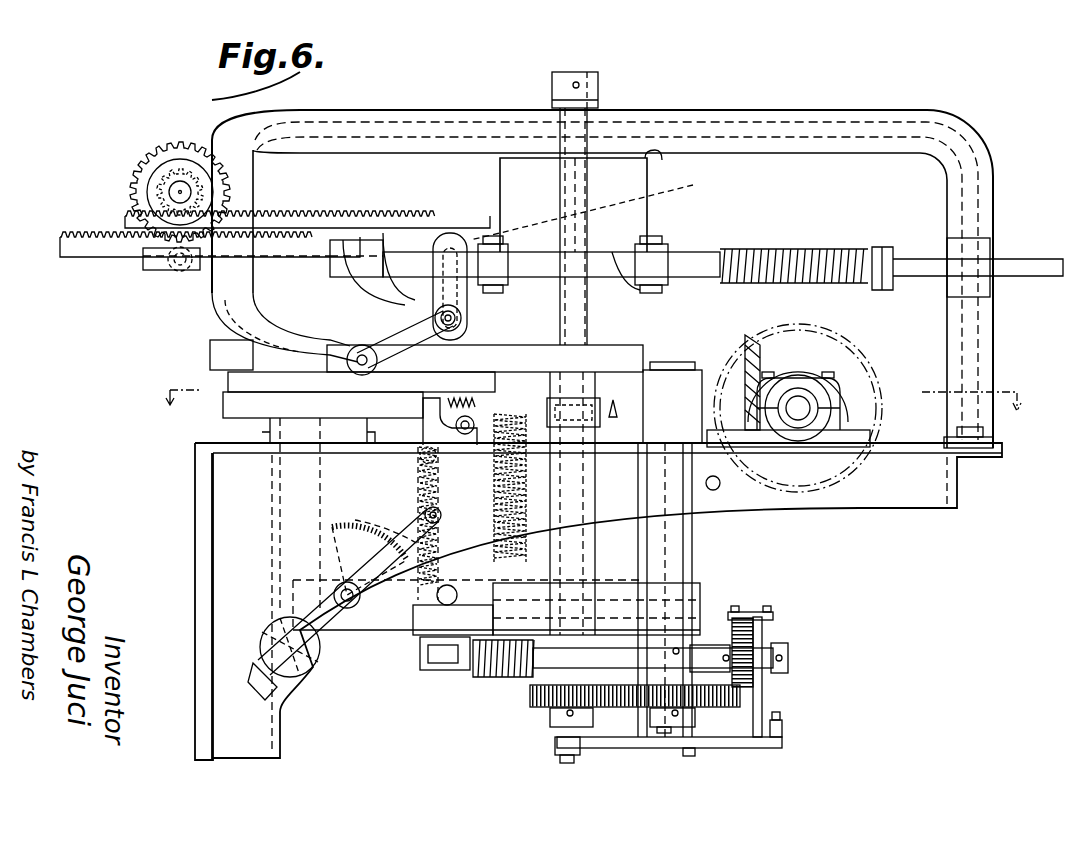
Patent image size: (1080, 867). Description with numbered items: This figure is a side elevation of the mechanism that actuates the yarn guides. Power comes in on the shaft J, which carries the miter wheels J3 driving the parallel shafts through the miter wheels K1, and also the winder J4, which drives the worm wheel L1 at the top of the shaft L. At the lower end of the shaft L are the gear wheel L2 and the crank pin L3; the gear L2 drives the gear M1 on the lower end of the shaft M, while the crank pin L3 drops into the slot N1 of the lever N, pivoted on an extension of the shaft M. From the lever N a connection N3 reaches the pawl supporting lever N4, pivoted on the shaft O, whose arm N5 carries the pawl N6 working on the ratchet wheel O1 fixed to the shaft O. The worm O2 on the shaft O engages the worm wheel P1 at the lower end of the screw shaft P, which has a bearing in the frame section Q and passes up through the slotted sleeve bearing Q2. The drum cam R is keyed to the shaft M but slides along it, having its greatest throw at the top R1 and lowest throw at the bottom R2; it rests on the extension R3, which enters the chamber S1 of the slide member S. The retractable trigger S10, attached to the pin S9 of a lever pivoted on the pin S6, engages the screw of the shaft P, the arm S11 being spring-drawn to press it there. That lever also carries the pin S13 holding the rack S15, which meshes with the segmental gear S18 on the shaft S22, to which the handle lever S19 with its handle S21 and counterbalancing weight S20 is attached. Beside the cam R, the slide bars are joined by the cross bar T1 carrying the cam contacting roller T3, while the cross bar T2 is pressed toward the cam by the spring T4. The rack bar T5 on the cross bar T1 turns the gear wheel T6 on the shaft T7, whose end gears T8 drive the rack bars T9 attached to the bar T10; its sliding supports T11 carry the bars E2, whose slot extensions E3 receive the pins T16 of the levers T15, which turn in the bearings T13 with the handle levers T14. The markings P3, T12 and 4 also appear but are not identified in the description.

The drum cam R is at (573, 205).
The top of the cam R1 is at (662, 165).
The bottom of the cam R2 is at (626, 281).
The extension R3 is at (598, 322).
The link P3 is at (591, 206).
The cross bar T1 is at (478, 238).
The cross bar T2 is at (700, 250).
The cam contacting roller T3 is at (492, 238).
The spring T4 is at (780, 252).
The rack bar T5 is at (300, 212).
The gear wheel T6 is at (142, 185).
The shaft T7 is at (178, 180).
The gear wheels T8 is at (135, 205).
The rack bars T9 is at (128, 250).
The bar T10 is at (380, 247).
The sliding supports T11 is at (379, 277).
The pivot T12 is at (368, 372).
The bearings T13 is at (340, 345).
The handle levers T14 is at (520, 328).
The levers T15 is at (400, 330).
The pins T16 is at (460, 314).
The bars E2 is at (210, 352).
The slot extensions E3 is at (450, 262).
The section line 4 is at (591, 411).
The slide member S is at (484, 421).
The chamber S1 is at (600, 427).
The pivot pin S6 is at (460, 490).
The pivot pin S9 is at (506, 344).
The retractable trigger S10 is at (536, 372).
The arm S11 is at (446, 402).
The pivot pin S13 is at (418, 468).
The rack S15 is at (387, 525).
The segmental gear S18 is at (369, 540).
The handle lever S19 is at (338, 585).
The counterbalancing weight S20 is at (308, 662).
The handle S21 is at (442, 514).
The shaft S22 is at (348, 618).
The frame section Q is at (453, 610).
The sleeve bearing Q2 is at (520, 488).
The screw shaft P is at (510, 604).
The worm wheel P1 is at (448, 672).
The shaft M is at (567, 550).
The gear M1 is at (530, 700).
The shaft O is at (805, 655).
The ratchet wheel O1 is at (752, 672).
The worm O2 is at (495, 677).
The lever N is at (622, 748).
The slot N1 is at (662, 748).
The connection N3 is at (782, 727).
The pawl supporting lever N4 is at (762, 700).
The arm N5 is at (768, 622).
The pawl N6 is at (740, 616).
The shaft L is at (680, 368).
The worm wheel L1 is at (655, 370).
The gear wheel L2 is at (700, 718).
The crank pin L3 is at (678, 748).
The shaft J is at (798, 408).
The miter wheels J3 is at (850, 398).
The winder J4 is at (836, 348).
The miter wheels K1 is at (750, 338).